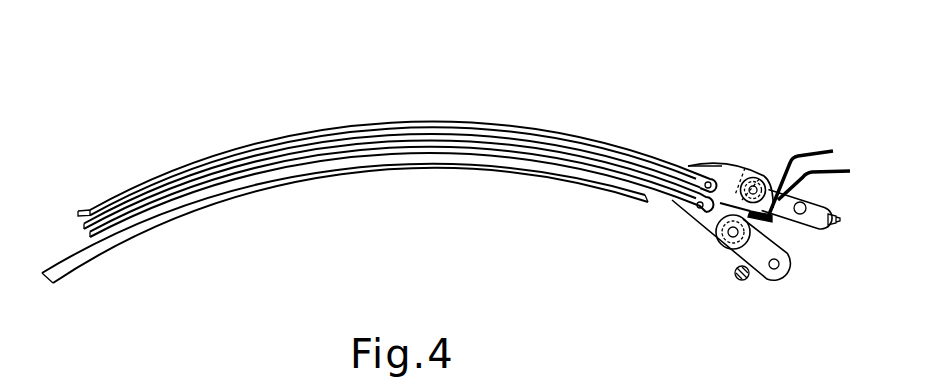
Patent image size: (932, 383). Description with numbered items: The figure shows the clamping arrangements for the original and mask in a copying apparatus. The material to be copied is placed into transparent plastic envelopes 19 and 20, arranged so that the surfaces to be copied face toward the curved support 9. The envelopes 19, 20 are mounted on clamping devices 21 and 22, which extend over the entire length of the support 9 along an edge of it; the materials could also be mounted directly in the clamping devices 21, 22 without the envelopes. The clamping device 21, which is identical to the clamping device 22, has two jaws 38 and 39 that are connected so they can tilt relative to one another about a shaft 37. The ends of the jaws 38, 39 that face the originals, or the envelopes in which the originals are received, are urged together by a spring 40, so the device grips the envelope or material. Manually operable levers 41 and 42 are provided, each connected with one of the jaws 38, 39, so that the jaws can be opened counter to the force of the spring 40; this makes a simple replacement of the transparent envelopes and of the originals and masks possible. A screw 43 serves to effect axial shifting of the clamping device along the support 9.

The support 9 is at (50, 277).
The transparent plastic envelope 19 is at (88, 208).
The transparent plastic envelope 20 is at (92, 232).
The clamping device 21 is at (848, 212).
The clamping device 22 is at (675, 278).
The shaft 37 is at (762, 178).
The jaw 38 is at (722, 165).
The jaw 39 is at (755, 178).
The spring 40 is at (732, 178).
The manually operable lever 41 is at (850, 172).
The manually operable lever 42 is at (827, 150).
The screw 43 is at (840, 224).